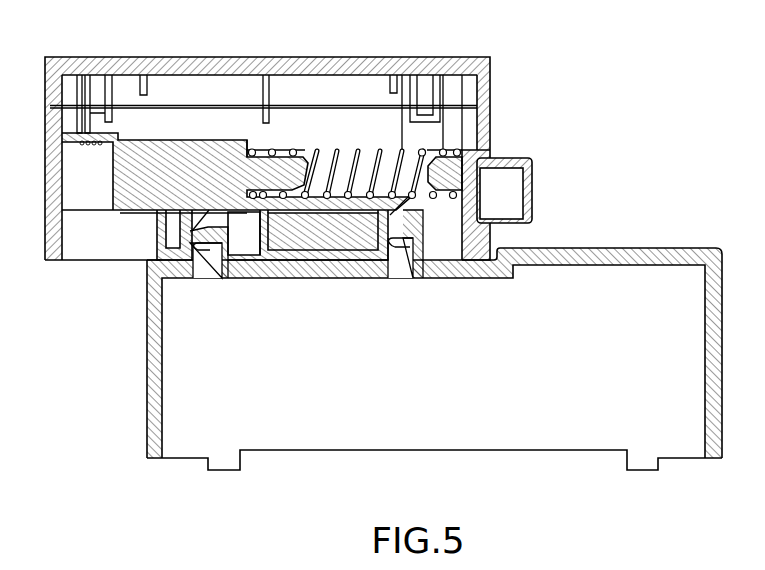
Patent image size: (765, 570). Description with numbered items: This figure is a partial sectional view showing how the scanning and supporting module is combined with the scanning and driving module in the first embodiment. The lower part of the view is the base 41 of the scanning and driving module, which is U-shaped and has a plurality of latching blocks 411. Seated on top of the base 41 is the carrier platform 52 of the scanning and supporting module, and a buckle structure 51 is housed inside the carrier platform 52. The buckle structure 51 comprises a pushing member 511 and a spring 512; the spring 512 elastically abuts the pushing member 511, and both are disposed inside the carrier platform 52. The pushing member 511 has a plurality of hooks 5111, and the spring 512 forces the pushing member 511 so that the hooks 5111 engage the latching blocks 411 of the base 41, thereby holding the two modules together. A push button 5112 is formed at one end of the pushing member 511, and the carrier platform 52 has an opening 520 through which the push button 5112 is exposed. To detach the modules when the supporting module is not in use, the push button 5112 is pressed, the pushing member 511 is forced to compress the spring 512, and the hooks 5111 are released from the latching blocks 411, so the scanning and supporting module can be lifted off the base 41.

The base 41 is at (680, 246).
The latching block 411 is at (218, 216).
The buckle structure 51 is at (298, 140).
The pushing member 511 is at (153, 233).
The hook 5111 is at (208, 243).
The push button 5112 is at (533, 185).
The spring 512 is at (328, 150).
The carrier platform 52 is at (487, 130).
The opening 520 is at (482, 155).